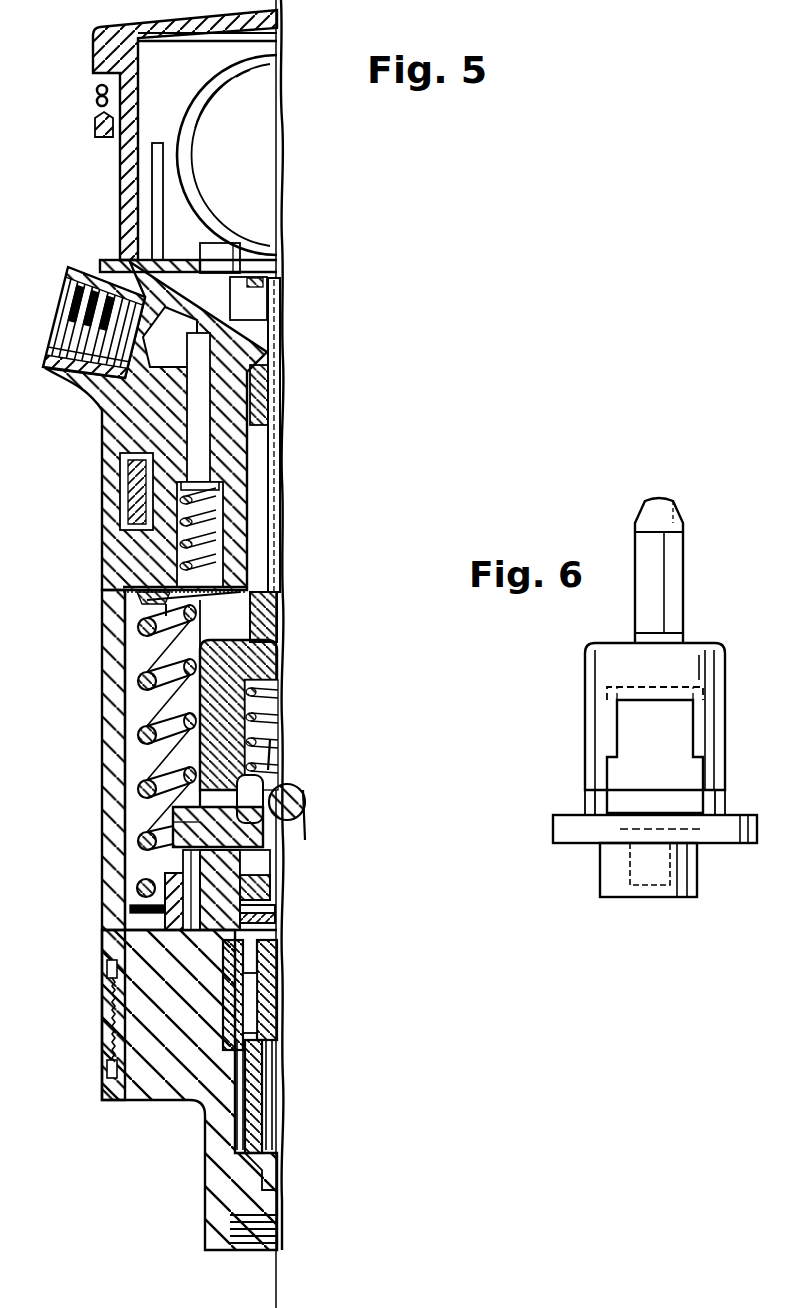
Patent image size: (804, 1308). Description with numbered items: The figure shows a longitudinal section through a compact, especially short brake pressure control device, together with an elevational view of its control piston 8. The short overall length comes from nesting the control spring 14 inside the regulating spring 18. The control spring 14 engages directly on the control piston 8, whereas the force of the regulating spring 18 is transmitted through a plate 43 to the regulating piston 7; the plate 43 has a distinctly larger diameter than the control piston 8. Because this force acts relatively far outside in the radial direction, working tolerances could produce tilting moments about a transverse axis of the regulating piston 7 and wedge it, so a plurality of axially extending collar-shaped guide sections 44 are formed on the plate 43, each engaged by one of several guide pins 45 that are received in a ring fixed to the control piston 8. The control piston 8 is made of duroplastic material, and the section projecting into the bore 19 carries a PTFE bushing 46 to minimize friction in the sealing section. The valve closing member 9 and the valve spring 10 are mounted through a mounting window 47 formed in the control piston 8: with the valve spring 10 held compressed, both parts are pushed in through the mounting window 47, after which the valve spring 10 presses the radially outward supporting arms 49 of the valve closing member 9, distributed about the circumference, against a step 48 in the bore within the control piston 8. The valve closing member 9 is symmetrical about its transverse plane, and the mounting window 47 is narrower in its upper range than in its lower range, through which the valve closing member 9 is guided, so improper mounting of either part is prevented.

In FIG. 5, the regulating piston 7 is at (280, 1117).
In FIG. 5, the control piston 8 is at (258, 662).
In FIG. 6, the control piston 8 is at (573, 677).
In FIG. 5, the valve closing member 9 is at (290, 783).
In FIG. 5, the valve spring 10 is at (263, 718).
In FIG. 5, the control spring 14 is at (187, 713).
In FIG. 5, the regulating spring 18 is at (143, 837).
In FIG. 5, the bore 19 is at (253, 461).
In FIG. 5, the plate 43 is at (270, 920).
In FIG. 5, the guide sections 44 is at (267, 898).
In FIG. 5, the guide pins 45 is at (187, 867).
In FIG. 5, the PTFE bushing 46 is at (287, 594).
In FIG. 6, the PTFE bushing 46 is at (683, 563).
In FIG. 6, the mounting window 47 is at (643, 723).
In FIG. 5, the step 48 is at (263, 828).
In FIG. 6, the step 48 is at (617, 827).
In FIG. 5, the supporting arms 49 is at (193, 775).